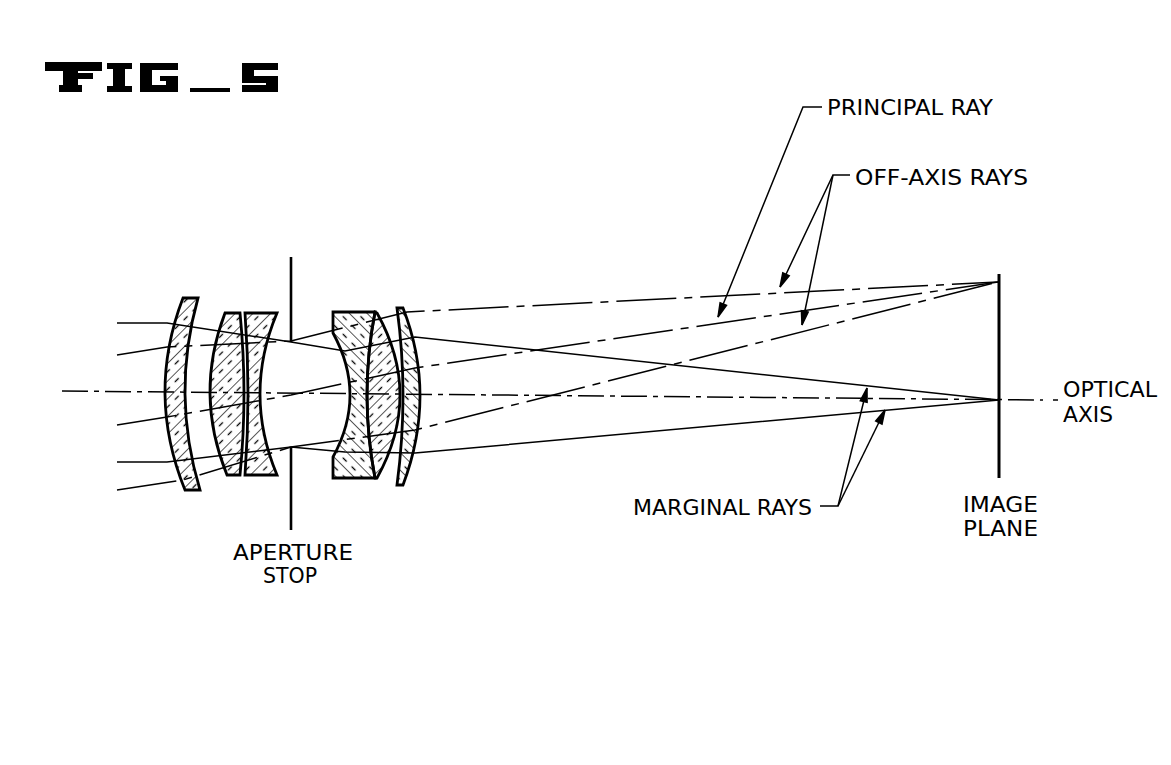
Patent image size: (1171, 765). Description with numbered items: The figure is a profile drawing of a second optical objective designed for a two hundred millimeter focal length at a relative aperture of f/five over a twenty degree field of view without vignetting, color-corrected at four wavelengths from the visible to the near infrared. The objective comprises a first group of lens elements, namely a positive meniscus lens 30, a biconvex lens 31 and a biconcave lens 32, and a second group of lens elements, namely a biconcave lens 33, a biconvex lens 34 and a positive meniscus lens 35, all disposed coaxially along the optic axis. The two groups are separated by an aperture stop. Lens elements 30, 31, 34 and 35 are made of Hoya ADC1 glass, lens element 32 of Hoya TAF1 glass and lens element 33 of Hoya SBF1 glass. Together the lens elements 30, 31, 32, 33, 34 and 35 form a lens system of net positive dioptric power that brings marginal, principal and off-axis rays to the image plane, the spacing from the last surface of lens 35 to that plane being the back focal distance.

The positive meniscus lens 30 is at (188, 298).
The biconvex lens 31 is at (228, 314).
The biconcave lens 32 is at (257, 314).
The biconcave lens 33 is at (340, 312).
The biconvex lens 34 is at (378, 312).
The positive meniscus lens 35 is at (406, 308).